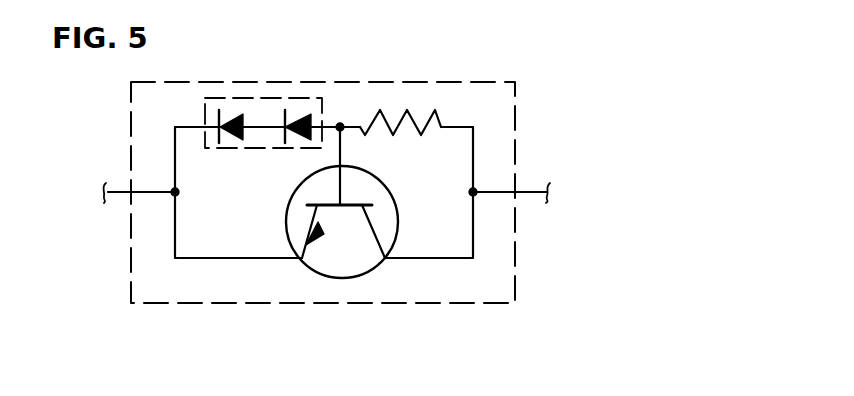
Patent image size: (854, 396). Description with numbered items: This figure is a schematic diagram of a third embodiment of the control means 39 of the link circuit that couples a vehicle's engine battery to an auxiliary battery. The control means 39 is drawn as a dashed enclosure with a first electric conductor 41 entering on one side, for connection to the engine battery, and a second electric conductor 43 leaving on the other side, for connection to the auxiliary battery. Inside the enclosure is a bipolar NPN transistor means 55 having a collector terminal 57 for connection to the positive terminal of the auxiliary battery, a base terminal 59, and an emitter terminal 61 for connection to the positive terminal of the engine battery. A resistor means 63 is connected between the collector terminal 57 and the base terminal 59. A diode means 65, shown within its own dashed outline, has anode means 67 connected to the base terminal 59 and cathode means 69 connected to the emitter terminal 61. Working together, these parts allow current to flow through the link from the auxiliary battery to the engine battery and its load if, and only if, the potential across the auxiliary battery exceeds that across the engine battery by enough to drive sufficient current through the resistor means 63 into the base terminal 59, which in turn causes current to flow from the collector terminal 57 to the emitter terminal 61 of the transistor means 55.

The control means 39 is at (437, 80).
The first electric conductor 41 is at (122, 193).
The second electric conductor 43 is at (529, 192).
The bipolar NPN transistor means 55 is at (352, 292).
The collector terminal 57 is at (376, 228).
The base terminal 59 is at (353, 205).
The emitter terminal 61 is at (308, 206).
The resistor means 63 is at (450, 111).
The diode means 65 is at (237, 97).
The anode means 67 is at (313, 110).
The cathode means 69 is at (214, 116).